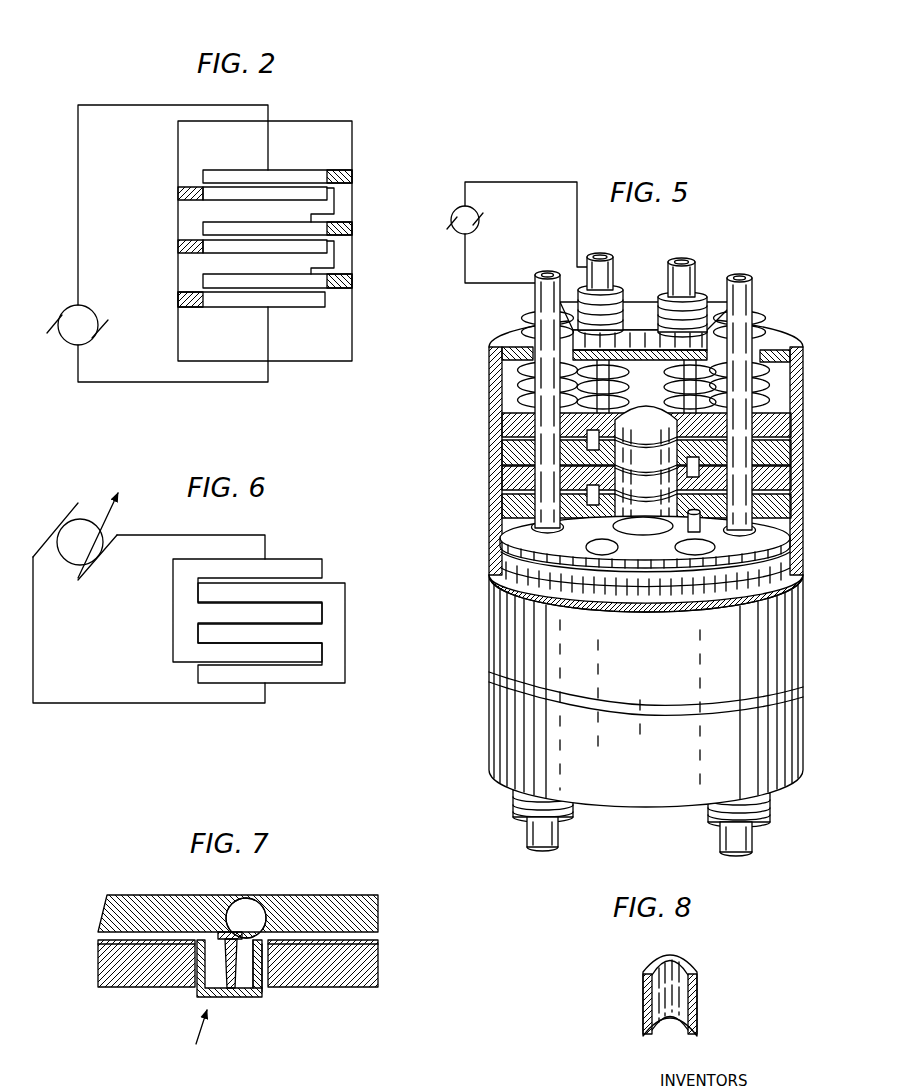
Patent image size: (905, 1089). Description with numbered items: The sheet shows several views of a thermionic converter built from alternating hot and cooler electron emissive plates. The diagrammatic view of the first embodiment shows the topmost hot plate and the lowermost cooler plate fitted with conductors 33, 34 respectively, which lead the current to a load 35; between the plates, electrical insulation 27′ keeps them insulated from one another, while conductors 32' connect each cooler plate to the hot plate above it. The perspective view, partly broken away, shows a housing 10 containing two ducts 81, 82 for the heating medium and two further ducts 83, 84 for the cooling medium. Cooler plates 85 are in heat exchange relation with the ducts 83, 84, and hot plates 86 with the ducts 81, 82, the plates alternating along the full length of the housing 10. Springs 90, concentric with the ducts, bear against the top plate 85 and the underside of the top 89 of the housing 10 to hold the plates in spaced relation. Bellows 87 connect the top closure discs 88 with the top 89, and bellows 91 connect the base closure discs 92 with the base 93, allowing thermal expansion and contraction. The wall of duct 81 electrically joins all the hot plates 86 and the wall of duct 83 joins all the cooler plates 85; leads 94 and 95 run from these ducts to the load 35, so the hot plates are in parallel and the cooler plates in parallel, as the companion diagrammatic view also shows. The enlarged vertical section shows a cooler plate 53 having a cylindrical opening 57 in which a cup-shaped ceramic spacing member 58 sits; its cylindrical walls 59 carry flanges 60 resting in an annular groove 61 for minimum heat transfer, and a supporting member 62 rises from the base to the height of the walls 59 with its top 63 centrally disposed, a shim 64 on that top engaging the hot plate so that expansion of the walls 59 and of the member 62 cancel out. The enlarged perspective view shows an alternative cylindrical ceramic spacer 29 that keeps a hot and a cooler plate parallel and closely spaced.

In FIG. 5, the housing 10 is at (489, 641).
In FIG. 2, the electrical insulation 27′ is at (178, 193).
In FIG. 5, the ceramic spacer 29 is at (685, 522).
In FIG. 8, the ceramic spacer 29 is at (645, 990).
In FIG. 2, the conductors 32' is at (351, 236).
In FIG. 2, the electrical conductor 33 is at (211, 107).
In FIG. 2, the electrical conductor 34 is at (204, 384).
In FIG. 2, the load 35 is at (77, 325).
In FIG. 6, the load 35 is at (75, 536).
In FIG. 5, the load 35 is at (465, 220).
In FIG. 7, the cooler plate 53 is at (378, 966).
In FIG. 7, the cylindrical opening 57 is at (280, 992).
In FIG. 7, the ceramic spacing member 58 is at (182, 1035).
In FIG. 7, the cylindrical walls 59 is at (197, 990).
In FIG. 7, the flanges 60 is at (187, 943).
In FIG. 7, the annular groove 61 is at (282, 994).
In FIG. 7, the supporting member 62 is at (229, 1000).
In FIG. 7, the top of supporting member 63 is at (258, 917).
In FIG. 7, the shim 64 is at (229, 930).
In FIG. 5, the duct 81 is at (557, 278).
In FIG. 5, the duct 82 is at (705, 262).
In FIG. 5, the duct 83 is at (622, 260).
In FIG. 5, the duct 84 is at (750, 276).
In FIG. 5, the cooler plate 85 is at (502, 420).
In FIG. 5, the hot plate 86 is at (502, 452).
In FIG. 5, the bellows 87 is at (500, 338).
In FIG. 5, the top closure discs 88 is at (527, 322).
In FIG. 5, the top of housing 89 is at (633, 325).
In FIG. 5, the springs 90 is at (766, 380).
In FIG. 5, the bellows 91 is at (560, 806).
In FIG. 5, the base closure discs 92 is at (518, 825).
In FIG. 5, the base of housing 93 is at (667, 806).
In FIG. 6, the lead 94 is at (201, 705).
In FIG. 5, the lead 94 is at (465, 270).
In FIG. 6, the lead 95 is at (209, 535).
In FIG. 5, the lead 95 is at (568, 187).